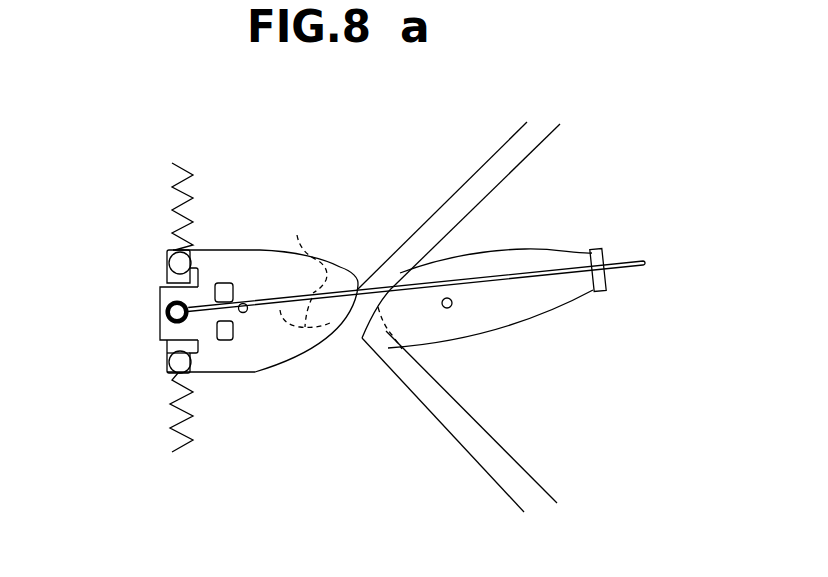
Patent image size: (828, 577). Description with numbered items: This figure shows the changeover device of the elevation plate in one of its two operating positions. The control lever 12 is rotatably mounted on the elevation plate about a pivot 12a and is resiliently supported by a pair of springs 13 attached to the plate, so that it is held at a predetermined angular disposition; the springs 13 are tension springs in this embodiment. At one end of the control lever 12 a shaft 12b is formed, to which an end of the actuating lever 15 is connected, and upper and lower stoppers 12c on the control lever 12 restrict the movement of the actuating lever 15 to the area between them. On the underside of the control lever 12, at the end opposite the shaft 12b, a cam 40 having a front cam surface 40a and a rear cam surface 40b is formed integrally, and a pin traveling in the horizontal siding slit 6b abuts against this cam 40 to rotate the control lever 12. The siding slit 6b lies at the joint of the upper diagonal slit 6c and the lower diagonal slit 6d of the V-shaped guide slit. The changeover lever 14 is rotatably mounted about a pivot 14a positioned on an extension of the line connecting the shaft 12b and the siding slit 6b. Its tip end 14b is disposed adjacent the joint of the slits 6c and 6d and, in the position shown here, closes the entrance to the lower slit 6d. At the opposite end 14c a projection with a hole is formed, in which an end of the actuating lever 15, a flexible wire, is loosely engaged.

The horizontal siding slit 6b is at (303, 338).
The upper diagonal slit 6c is at (456, 194).
The lower diagonal slit 6d is at (528, 478).
The control lever 12 is at (295, 352).
The pivot 12a is at (246, 316).
The shaft 12b is at (166, 313).
The stoppers 12c is at (214, 292).
The springs 13 is at (170, 163).
The changeover lever 14 is at (500, 252).
The pivot 14a is at (450, 308).
The tip end 14b is at (391, 336).
The opposite end 14c is at (605, 290).
The actuating lever 15 is at (640, 261).
The cam 40 is at (262, 289).
The front cam surface 40a is at (360, 280).
The rear cam surface 40b is at (328, 287).